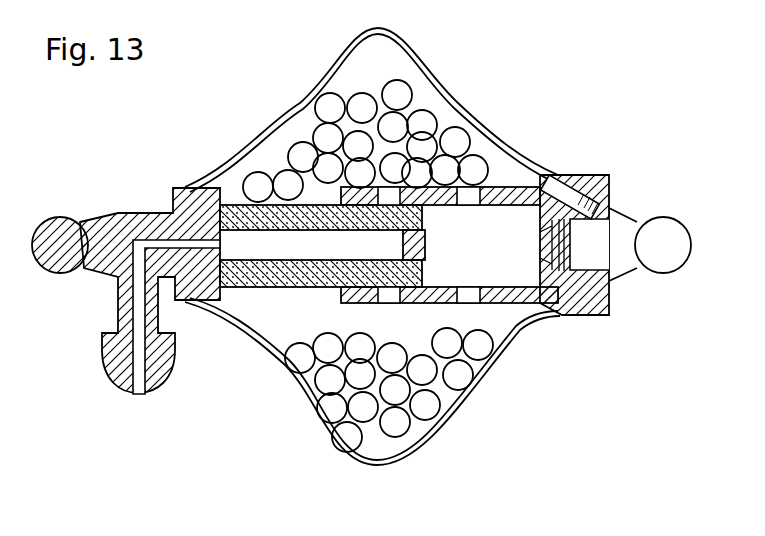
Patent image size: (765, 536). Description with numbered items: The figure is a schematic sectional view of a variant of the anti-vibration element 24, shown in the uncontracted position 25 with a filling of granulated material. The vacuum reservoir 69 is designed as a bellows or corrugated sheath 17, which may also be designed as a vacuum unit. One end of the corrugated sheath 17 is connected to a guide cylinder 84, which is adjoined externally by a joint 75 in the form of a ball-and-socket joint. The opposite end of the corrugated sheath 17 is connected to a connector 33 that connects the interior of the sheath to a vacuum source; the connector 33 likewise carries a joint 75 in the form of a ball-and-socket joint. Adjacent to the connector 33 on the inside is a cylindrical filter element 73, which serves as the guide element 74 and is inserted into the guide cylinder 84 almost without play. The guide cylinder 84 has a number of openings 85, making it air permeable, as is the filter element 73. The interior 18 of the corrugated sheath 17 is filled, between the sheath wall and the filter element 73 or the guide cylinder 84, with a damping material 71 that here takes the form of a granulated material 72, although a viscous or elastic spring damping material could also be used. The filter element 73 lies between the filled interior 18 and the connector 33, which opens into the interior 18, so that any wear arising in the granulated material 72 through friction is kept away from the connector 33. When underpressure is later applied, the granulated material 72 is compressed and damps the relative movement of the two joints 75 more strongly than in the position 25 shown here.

The corrugated sheath 17 is at (298, 104).
The interior 18 is at (365, 126).
The anti-vibration element 24 is at (562, 98).
The position 25 is at (286, 377).
The connector 33 is at (127, 386).
The vacuum reservoir 69 is at (442, 93).
The damping material 71 is at (346, 428).
The granulated material 72 is at (397, 425).
The filter element 73 is at (232, 205).
The guide element 74 is at (233, 292).
The joint 75 is at (55, 238).
The guide cylinder 84 is at (513, 297).
The openings 85 is at (470, 297).